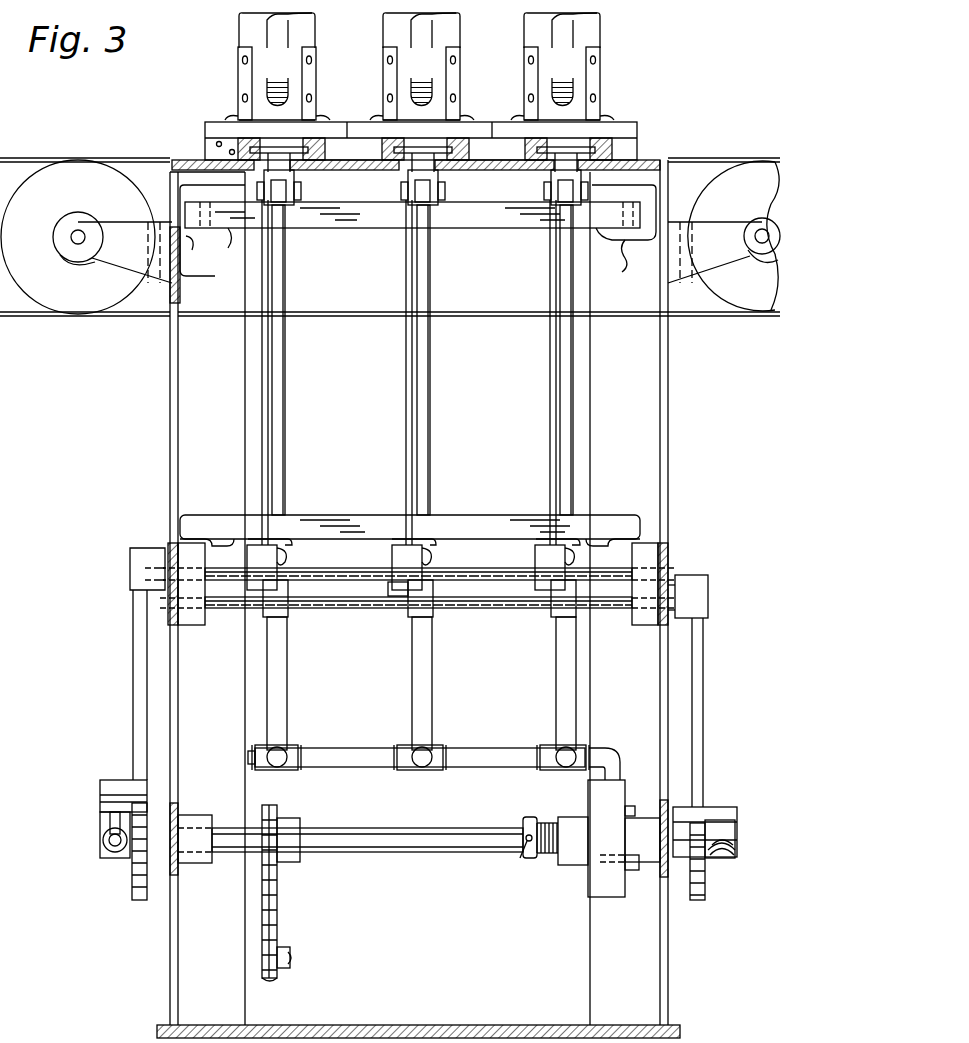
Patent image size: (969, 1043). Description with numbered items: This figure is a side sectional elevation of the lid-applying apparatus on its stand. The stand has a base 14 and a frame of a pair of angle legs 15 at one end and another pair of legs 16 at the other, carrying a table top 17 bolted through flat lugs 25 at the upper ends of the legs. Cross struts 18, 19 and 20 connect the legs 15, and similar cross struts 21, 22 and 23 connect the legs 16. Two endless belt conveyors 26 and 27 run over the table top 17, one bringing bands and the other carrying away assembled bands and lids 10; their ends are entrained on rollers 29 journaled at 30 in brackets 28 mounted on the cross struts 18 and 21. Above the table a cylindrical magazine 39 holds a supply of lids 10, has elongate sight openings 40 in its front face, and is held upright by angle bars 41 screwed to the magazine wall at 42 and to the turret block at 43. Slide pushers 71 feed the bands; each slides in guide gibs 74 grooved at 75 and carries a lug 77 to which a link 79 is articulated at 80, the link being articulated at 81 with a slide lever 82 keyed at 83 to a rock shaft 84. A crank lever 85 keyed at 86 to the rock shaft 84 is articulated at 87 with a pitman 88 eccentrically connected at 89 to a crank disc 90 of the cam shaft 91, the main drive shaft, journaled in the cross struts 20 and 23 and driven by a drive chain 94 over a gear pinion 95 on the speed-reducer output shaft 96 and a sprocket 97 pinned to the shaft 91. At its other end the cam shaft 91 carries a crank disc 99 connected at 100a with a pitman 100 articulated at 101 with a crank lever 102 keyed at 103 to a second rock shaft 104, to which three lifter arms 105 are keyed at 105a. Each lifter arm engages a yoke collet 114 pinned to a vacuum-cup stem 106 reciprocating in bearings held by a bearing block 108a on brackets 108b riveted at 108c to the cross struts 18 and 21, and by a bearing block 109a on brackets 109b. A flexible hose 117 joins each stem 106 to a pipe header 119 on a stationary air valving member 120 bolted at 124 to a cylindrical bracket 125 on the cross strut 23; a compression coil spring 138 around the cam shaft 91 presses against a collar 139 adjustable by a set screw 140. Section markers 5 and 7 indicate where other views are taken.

The section line 5- 5 is at (181, 120).
The section line 7- 7 is at (548, 786).
The lids 10 is at (270, 85).
The base 14 is at (402, 1025).
The legs 15 is at (170, 410).
The legs 16 is at (668, 404).
The table top 17 is at (660, 160).
The cross strut 18 is at (180, 298).
The cross strut 19 is at (168, 546).
The cross strut 20 is at (178, 808).
The cross strut 21 is at (668, 300).
The cross strut 22 is at (672, 548).
The cross strut 23 is at (668, 808).
The flat lugs 25 is at (188, 175).
The endless belt conveyor 26 is at (105, 316).
The endless belt conveyor 27 is at (30, 317).
The brackets 28 is at (147, 270).
The rollers 29 is at (74, 162).
The journal 30 is at (72, 231).
The cylindrical magazine 39 is at (312, 28).
The sight openings 40 is at (440, 36).
The angle bars 41 is at (600, 70).
The screws 42 is at (528, 60).
The screws 43 is at (512, 118).
The slide pusher 71 is at (566, 154).
The guide gibs 74 is at (520, 152).
The groove 75 is at (618, 147).
The lug 77 is at (436, 203).
The link 79 is at (553, 200).
The articulation 80 is at (440, 190).
The articulation 81 is at (408, 190).
The slide lever 82 is at (262, 396).
The key 83 is at (255, 585).
The rock shaft 84 is at (332, 582).
The crank lever 85 is at (133, 706).
The key 86 is at (130, 570).
The articulation 87 is at (100, 785).
The pitman 88 is at (110, 818).
The eccentric articulation 89 is at (100, 852).
The crank disc 90 is at (134, 888).
The cam shaft 91 is at (402, 852).
The drive chain 94 is at (278, 890).
The gear pinion 95 is at (277, 975).
The output shaft 96 is at (285, 952).
The sprocket 97 is at (280, 806).
The crank disc 99 is at (705, 897).
The pitman 100 is at (735, 845).
The eccentric articulation 100a is at (730, 856).
The articulation 101 is at (737, 820).
The crank lever 102 is at (703, 700).
The key 103 is at (708, 588).
The rock shaft 104 is at (526, 608).
The lifter arm 105 is at (292, 556).
The key 105a is at (418, 600).
The stem 106 is at (286, 356).
The bearing block 108a is at (332, 218).
The brackets 108b is at (230, 236).
The rivets 108c is at (188, 255).
The bearing block 109a is at (462, 522).
The brackets 109b is at (215, 540).
The yoke collet 114 is at (290, 540).
The flexible hose 117 is at (287, 684).
The pipe header 119 is at (352, 747).
The stationary air valving member 120 is at (622, 765).
The bolts 124 is at (624, 878).
The cylindrical bracket 125 is at (645, 865).
The compression coil spring 138 is at (542, 822).
The collar 139 is at (528, 850).
The set screw 140 is at (522, 850).